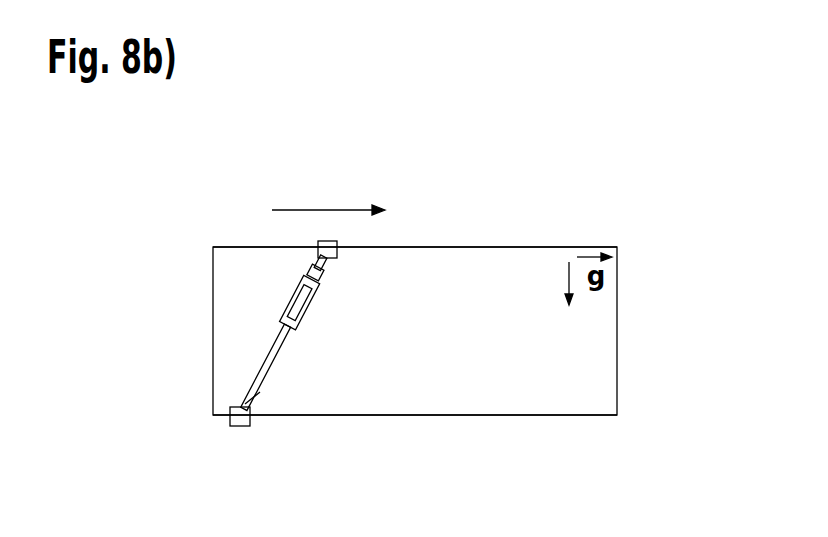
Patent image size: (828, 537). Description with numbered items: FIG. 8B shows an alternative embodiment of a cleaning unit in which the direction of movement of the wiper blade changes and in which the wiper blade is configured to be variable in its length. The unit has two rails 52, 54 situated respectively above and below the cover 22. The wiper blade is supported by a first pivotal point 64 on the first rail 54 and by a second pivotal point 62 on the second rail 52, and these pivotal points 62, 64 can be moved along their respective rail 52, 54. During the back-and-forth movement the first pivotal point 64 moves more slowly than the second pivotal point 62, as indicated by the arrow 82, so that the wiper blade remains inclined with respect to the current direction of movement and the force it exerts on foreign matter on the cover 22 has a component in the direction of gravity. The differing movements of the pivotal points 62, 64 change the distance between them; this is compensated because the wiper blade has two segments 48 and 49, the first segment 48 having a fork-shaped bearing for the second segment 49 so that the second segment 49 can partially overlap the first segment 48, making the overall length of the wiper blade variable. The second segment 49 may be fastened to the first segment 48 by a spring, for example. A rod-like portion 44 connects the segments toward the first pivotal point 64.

The cover 22 is at (607, 355).
The piston rod 44 is at (268, 357).
The first segment 48 is at (290, 300).
The second segment 49 is at (258, 394).
The second rail 52 is at (520, 247).
The first rail 54 is at (520, 415).
The second pivotal point 62 is at (318, 242).
The first pivotal point 64 is at (239, 428).
The arrow 82 is at (320, 210).